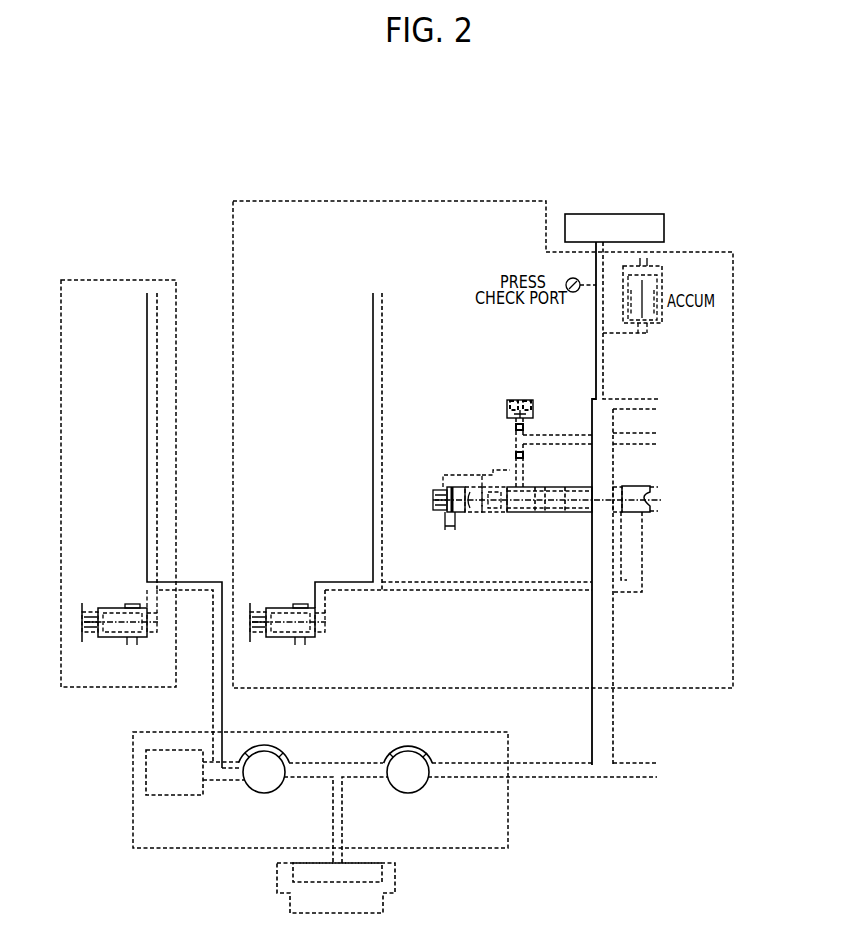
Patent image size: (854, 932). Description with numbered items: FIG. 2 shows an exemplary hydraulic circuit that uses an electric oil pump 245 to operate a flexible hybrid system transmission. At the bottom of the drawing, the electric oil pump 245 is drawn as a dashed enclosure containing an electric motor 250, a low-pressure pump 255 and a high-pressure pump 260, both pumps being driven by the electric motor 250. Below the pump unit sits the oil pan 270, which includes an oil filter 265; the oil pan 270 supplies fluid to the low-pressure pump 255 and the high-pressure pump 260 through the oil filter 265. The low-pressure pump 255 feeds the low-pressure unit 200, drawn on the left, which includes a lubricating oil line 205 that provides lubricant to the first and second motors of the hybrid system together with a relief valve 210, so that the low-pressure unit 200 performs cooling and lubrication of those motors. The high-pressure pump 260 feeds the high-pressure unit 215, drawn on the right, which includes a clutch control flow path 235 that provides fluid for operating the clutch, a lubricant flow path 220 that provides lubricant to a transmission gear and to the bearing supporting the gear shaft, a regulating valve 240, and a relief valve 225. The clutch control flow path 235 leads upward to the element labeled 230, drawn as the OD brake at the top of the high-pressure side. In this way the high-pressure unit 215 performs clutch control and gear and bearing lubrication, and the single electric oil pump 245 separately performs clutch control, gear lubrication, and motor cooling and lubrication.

The low-pressure unit 200 is at (114, 280).
The lubricating oil line 205 is at (147, 450).
The relief valve 210 is at (98, 608).
The high-pressure unit 215 is at (481, 201).
The lubricant flow path 220 is at (382, 372).
The relief valve 225 is at (267, 608).
The OD brake 230 is at (618, 214).
The clutch control flow path 235 is at (605, 372).
The regulating valve 240 is at (474, 512).
The electric oil pump 245 is at (162, 850).
The electric motor 250 is at (146, 757).
The low-pressure pump 255 is at (281, 744).
The high-pressure pump 260 is at (424, 744).
The oil filter 265 is at (385, 872).
The oil pan 270 is at (395, 887).